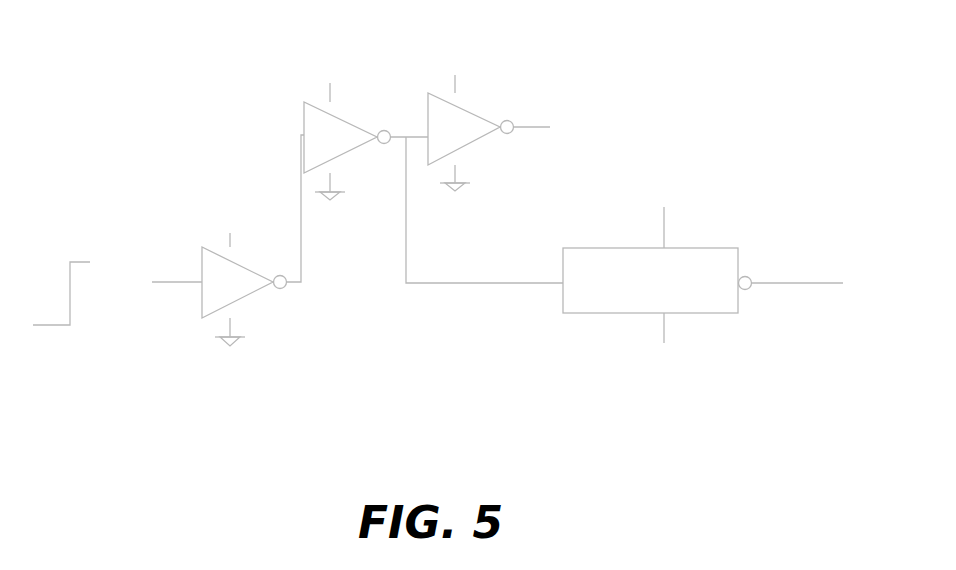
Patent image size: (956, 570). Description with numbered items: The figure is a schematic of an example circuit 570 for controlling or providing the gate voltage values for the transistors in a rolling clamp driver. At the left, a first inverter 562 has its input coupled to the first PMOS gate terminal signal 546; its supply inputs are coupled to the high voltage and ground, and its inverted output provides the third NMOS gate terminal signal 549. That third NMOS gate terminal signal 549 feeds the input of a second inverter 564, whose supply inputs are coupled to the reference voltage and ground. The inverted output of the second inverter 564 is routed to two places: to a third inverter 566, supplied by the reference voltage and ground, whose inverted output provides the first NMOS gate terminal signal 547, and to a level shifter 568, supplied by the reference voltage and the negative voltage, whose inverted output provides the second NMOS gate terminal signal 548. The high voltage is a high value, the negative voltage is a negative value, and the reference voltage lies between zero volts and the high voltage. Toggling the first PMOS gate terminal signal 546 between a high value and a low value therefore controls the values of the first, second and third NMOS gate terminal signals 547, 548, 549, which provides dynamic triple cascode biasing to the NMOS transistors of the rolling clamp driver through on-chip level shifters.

The circuit 570 is at (157, 48).
The gate terminal pcon1 of first PMOS transistor 546 is at (146, 288).
The gate terminal ncon1 of first NMOS transistor 547 is at (577, 152).
The gate terminal ncon2 of second NMOS transistor 548 is at (806, 288).
The gate terminal ncon3 of third NMOS transistor 549 is at (316, 288).
The first inverter 562 is at (236, 263).
The second inverter 564 is at (343, 119).
The third inverter 566 is at (468, 111).
The level shifter 568 is at (710, 249).